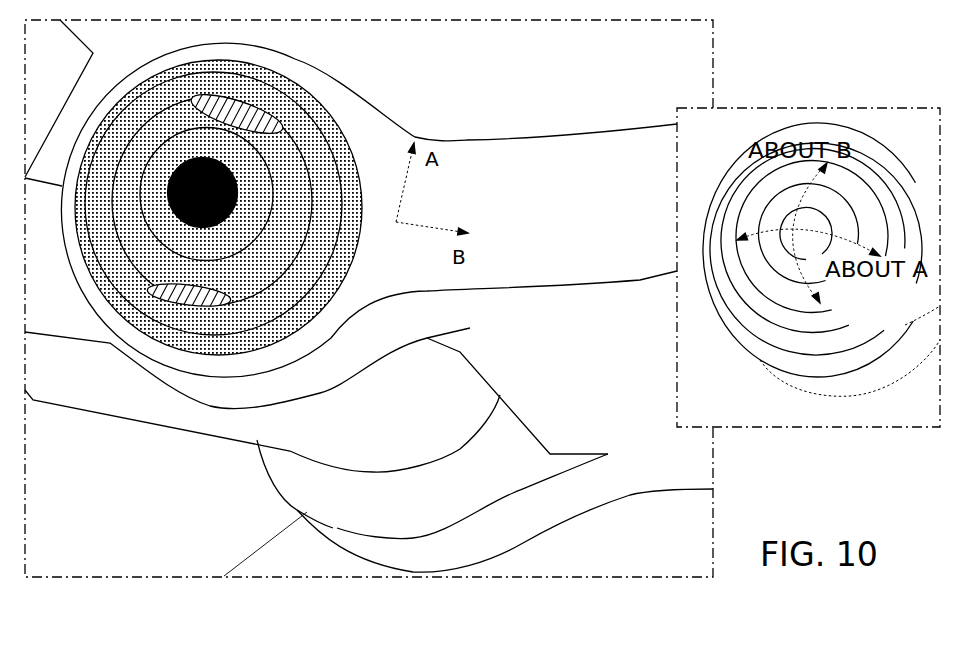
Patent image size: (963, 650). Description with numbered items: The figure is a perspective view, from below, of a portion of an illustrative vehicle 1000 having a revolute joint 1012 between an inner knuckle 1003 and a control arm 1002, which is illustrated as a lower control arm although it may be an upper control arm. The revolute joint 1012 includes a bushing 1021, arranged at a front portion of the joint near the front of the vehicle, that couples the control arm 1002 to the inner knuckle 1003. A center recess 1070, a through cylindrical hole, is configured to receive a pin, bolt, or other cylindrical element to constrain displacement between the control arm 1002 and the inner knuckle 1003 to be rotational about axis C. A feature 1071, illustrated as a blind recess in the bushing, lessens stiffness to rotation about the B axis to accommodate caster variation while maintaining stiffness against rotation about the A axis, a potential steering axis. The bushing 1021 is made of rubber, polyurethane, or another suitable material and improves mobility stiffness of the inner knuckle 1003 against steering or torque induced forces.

The vehicle 1000 is at (880, 51).
The control arm 1002 is at (540, 199).
The inner knuckle 1003 is at (393, 447).
The revolute joint 1012 is at (325, 63).
The bushing 1021 is at (112, 312).
The center recess 1070 is at (187, 229).
The feature 1071 is at (247, 132).